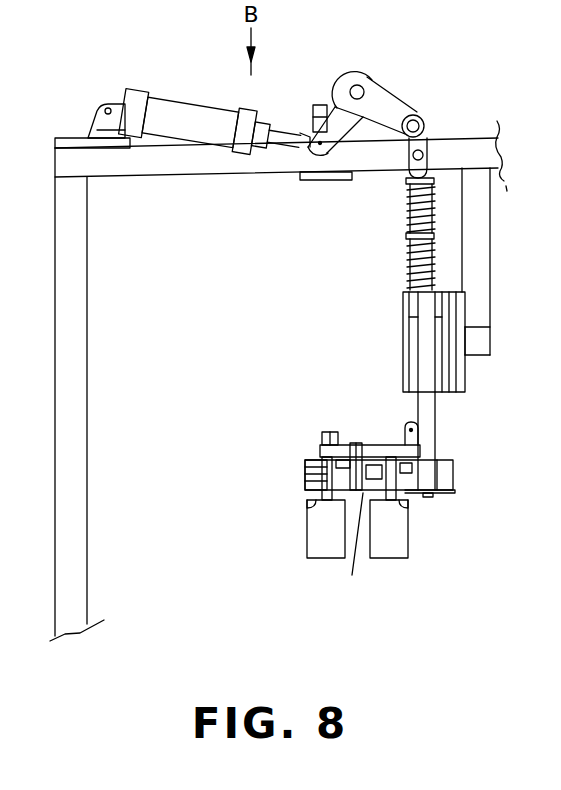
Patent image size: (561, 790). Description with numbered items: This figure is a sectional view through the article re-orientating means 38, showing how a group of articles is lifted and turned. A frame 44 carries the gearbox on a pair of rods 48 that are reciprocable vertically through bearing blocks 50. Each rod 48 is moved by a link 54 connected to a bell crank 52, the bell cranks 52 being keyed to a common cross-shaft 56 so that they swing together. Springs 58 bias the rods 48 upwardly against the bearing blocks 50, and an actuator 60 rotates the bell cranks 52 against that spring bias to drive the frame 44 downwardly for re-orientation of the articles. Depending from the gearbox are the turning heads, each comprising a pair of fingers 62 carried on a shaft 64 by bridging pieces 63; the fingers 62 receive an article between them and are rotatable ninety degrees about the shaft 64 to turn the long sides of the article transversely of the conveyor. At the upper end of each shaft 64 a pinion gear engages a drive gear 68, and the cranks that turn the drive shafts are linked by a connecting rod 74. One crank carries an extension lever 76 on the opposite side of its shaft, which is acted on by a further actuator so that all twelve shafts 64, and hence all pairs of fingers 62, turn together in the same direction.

The article re-orientating means 38 is at (140, 85).
The actuator 60 is at (198, 120).
The cross-shaft 56 is at (357, 86).
The bell crank 52 is at (392, 108).
The link 54 is at (428, 136).
The spring 58 is at (410, 208).
The bearing block 50 is at (403, 348).
The rod 48 is at (425, 410).
The extension lever 76 is at (379, 444).
The connecting rod 74 is at (322, 443).
The shaft 64 is at (306, 477).
The bridging piece 63 is at (307, 518).
The fingers 62 is at (327, 543).
The drive gear 68 is at (344, 550).
The frame 44 is at (425, 528).